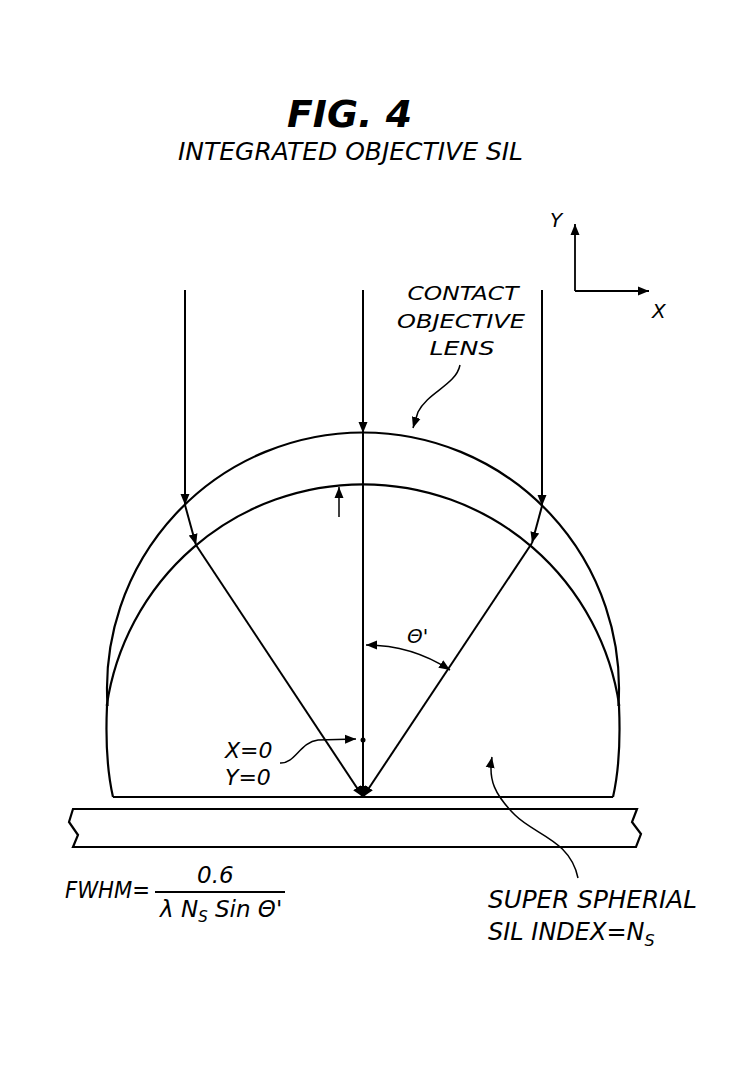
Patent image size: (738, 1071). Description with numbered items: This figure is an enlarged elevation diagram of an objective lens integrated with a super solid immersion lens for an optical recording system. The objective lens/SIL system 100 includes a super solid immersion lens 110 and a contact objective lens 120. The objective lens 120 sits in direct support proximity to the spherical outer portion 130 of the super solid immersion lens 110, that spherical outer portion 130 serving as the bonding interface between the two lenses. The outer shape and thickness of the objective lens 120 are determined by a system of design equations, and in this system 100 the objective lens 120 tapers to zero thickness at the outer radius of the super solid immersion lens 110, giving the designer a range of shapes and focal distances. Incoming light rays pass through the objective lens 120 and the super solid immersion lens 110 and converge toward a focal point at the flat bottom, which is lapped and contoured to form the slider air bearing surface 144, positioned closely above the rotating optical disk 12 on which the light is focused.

The objective lens/SIL (OSIL) system 100 is at (616, 506).
The super solid immersion lens (SSIL) 110 is at (588, 658).
The objective lens 120 is at (480, 482).
The spherical outer portion 130 is at (452, 511).
The slider air bearing surface (ABS) 144 is at (437, 798).
The optical disk 12 is at (490, 837).